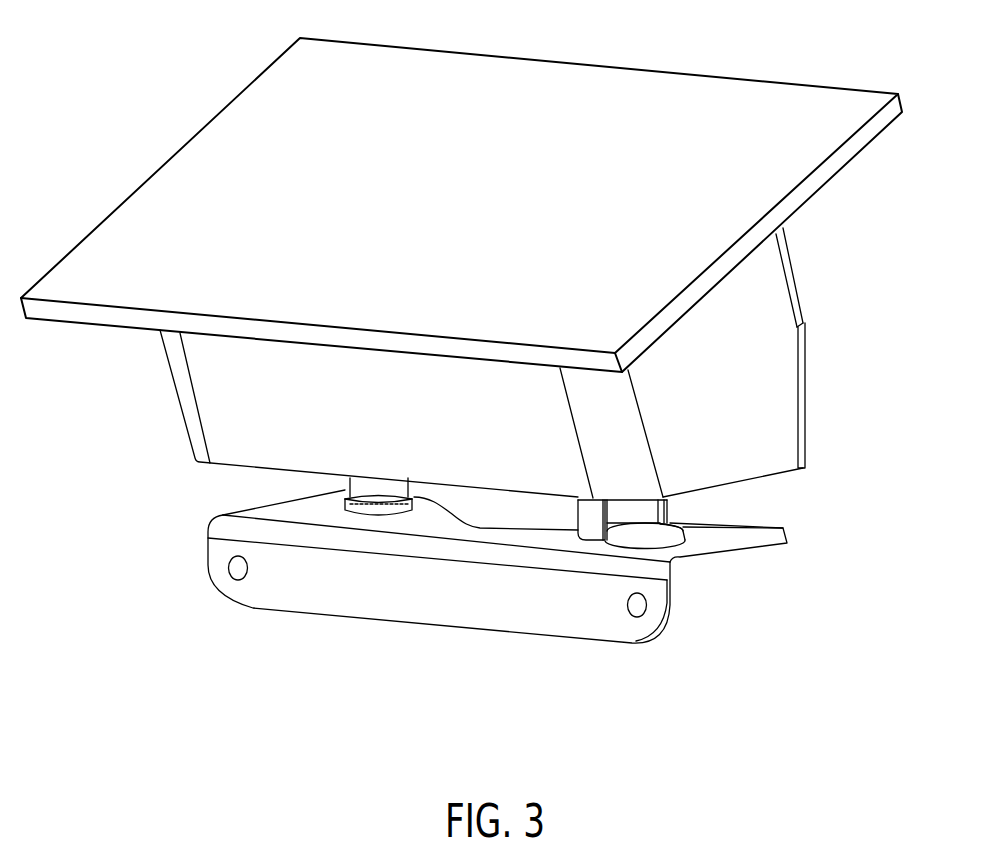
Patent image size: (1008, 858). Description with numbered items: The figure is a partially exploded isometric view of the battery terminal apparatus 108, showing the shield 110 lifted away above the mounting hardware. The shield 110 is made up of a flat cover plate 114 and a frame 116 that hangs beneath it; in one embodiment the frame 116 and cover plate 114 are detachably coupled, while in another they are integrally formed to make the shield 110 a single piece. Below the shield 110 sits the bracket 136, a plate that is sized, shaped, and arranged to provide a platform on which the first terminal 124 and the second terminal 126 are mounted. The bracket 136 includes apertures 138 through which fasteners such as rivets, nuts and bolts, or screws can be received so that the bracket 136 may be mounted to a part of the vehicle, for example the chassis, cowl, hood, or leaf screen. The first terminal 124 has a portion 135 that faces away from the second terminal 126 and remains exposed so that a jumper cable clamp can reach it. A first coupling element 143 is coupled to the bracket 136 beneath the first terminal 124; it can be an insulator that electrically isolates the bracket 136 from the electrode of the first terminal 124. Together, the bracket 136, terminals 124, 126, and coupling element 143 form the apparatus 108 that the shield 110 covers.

The shield 110 is at (155, 95).
The cover plate 114 is at (492, 120).
The frame 116 is at (758, 393).
The first terminal 124 is at (645, 513).
The second terminal 126 is at (375, 490).
The battery terminal apparatus 108 is at (194, 567).
The apertures 138 is at (228, 573).
The first coupling element 143 is at (670, 535).
The portion of the first terminal 135 is at (620, 513).
The bracket 136 is at (760, 548).